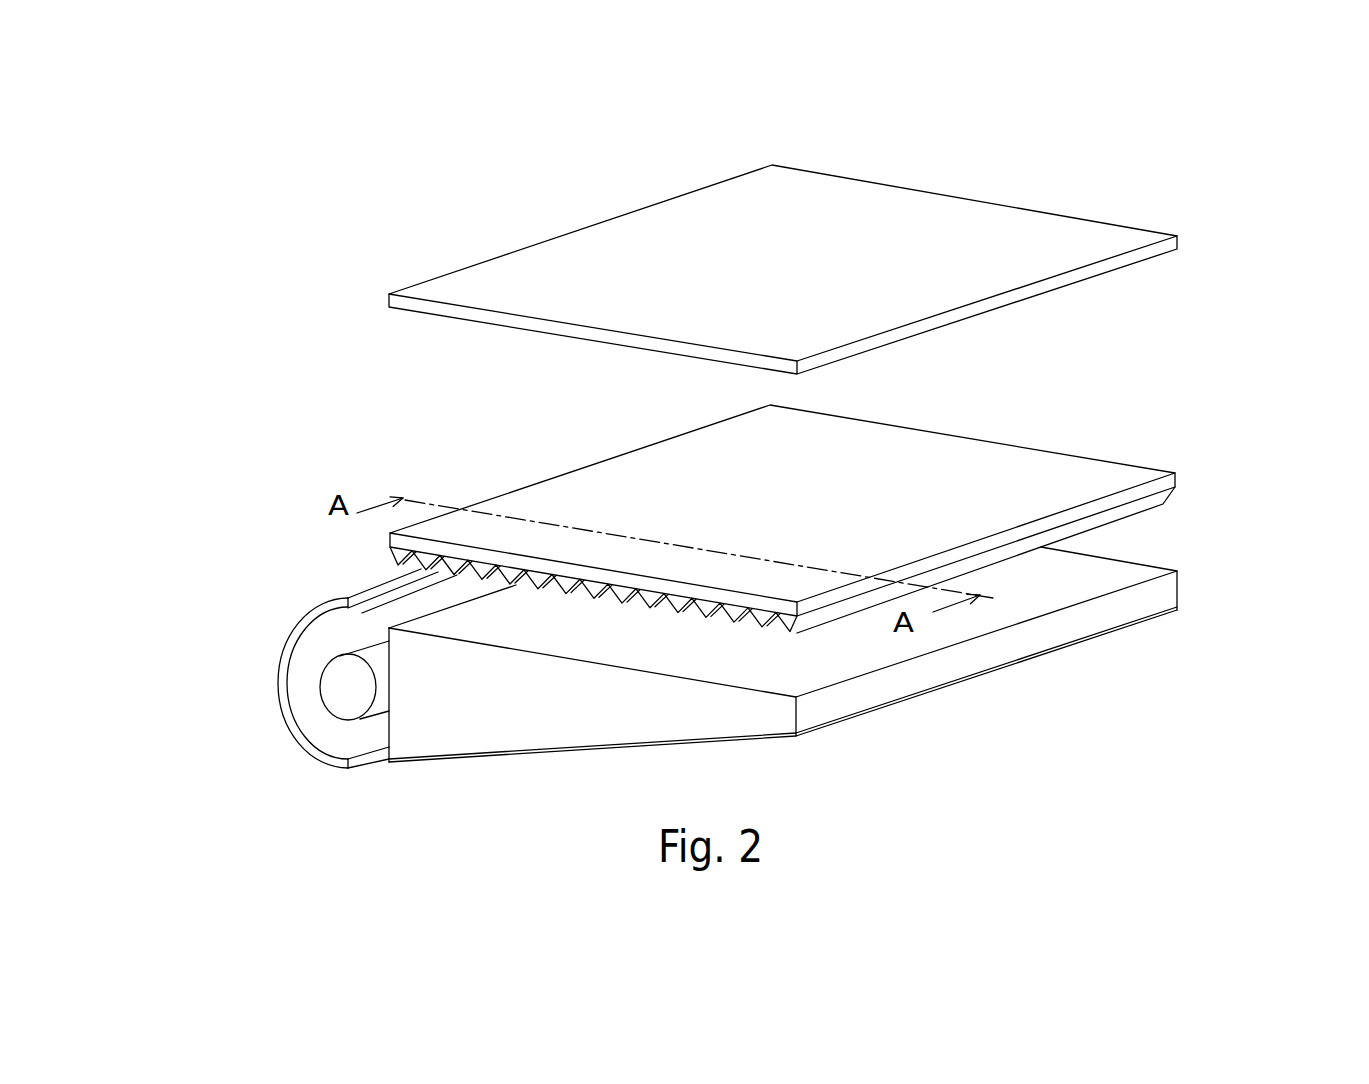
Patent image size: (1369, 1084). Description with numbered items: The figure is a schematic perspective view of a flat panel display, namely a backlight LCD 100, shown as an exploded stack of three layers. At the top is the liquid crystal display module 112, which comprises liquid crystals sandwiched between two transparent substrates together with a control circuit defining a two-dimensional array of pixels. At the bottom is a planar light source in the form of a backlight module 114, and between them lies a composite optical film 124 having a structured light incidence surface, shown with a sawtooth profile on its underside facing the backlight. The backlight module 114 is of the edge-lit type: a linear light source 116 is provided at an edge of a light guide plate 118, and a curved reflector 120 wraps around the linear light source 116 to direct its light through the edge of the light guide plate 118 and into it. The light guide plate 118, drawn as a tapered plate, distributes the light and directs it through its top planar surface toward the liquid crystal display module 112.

The backlight LCD 100 is at (1235, 240).
The liquid crystal display module 112 is at (390, 298).
The backlight module 114 is at (140, 605).
The linear light source 116 is at (318, 693).
The light guide plate 118 is at (389, 735).
The reflector 120 is at (297, 622).
The composite optical film 124 is at (390, 540).